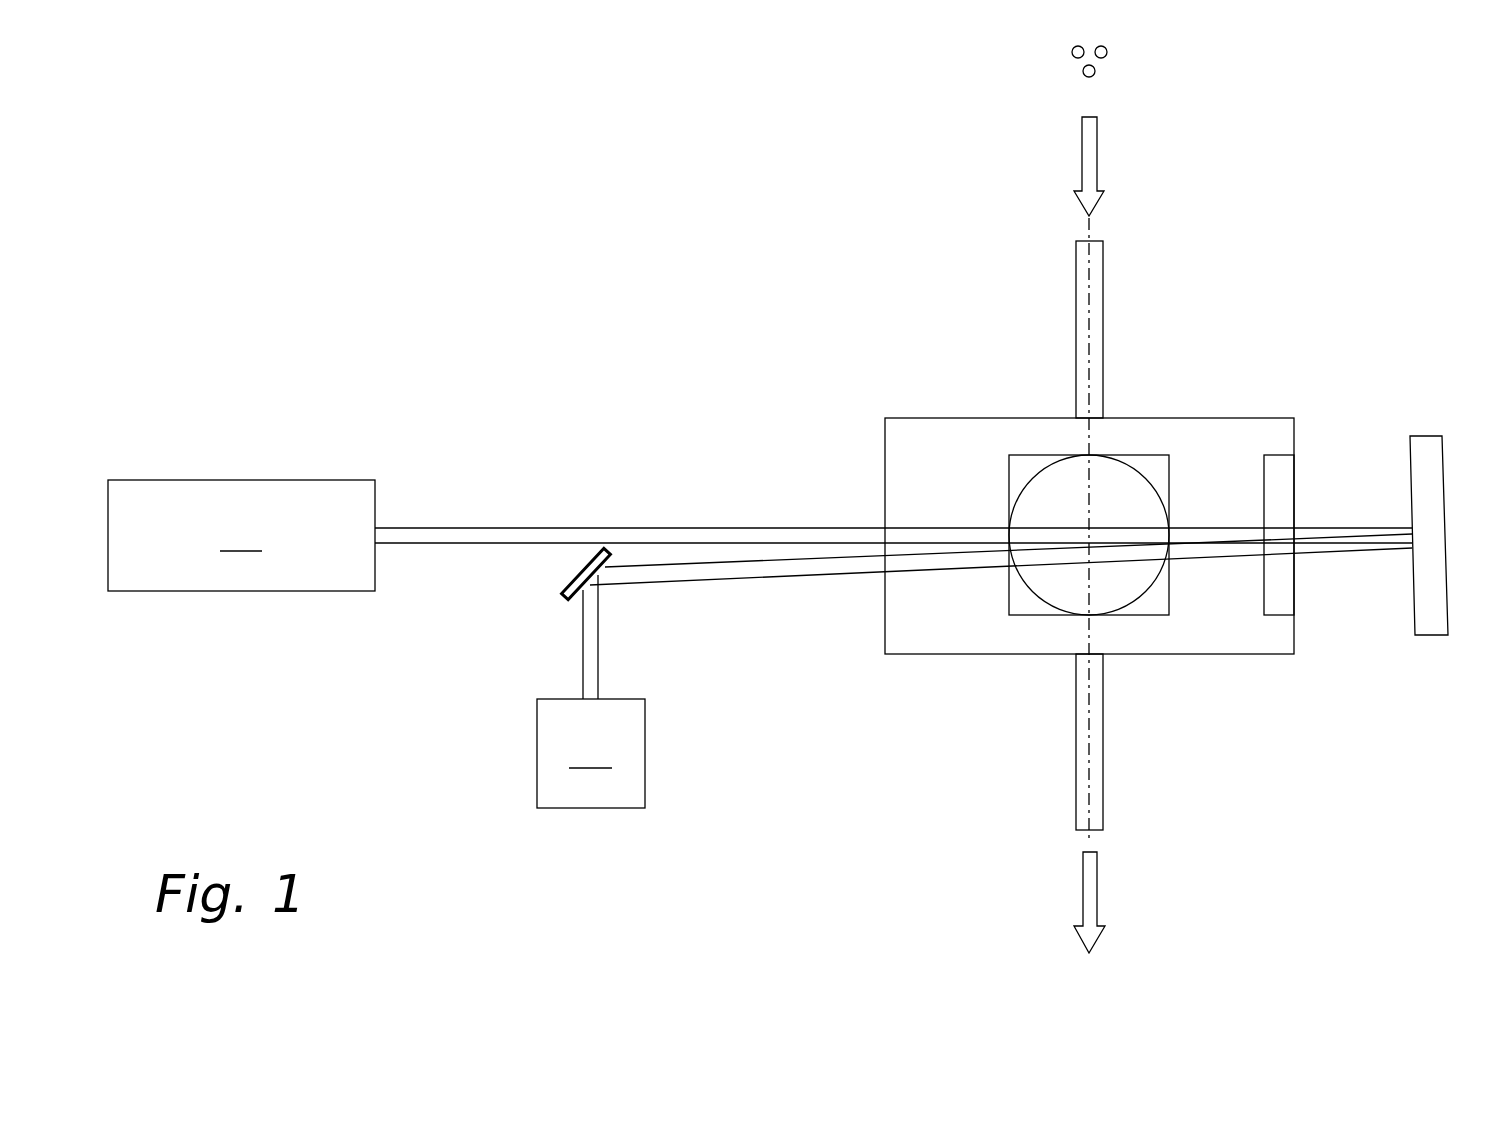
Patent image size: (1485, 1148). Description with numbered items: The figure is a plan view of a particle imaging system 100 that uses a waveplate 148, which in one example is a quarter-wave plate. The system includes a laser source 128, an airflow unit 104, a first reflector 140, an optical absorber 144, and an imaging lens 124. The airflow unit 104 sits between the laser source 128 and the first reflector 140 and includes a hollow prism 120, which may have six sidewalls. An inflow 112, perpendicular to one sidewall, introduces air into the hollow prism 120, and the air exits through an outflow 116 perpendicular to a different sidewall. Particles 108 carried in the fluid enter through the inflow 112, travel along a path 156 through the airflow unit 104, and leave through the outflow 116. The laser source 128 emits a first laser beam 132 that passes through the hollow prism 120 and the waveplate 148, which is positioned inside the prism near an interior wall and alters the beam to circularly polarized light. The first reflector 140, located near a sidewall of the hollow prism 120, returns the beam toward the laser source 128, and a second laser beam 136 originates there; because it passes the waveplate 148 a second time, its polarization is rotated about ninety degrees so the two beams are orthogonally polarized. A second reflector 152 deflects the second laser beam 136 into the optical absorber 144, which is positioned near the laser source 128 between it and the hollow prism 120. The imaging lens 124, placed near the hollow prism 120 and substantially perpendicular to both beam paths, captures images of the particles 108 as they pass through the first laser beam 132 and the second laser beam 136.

The particle imaging system 100 is at (306, 120).
The airflow unit 104 is at (1304, 300).
The particle 108 is at (1053, 52).
The inflow 112 is at (1076, 327).
The outflow 116 is at (1076, 747).
The hollow prism 120 is at (1243, 417).
The imaging lens 124 is at (1028, 588).
The laser source 128 is at (241, 535).
The first laser beam 132 is at (752, 527).
The second laser beam 136 is at (727, 583).
The first reflector 140 is at (1425, 432).
The optical absorber 144 is at (591, 691).
The waveplate 148 is at (1264, 597).
The second reflector 152 is at (578, 576).
The path 156 is at (1100, 150).